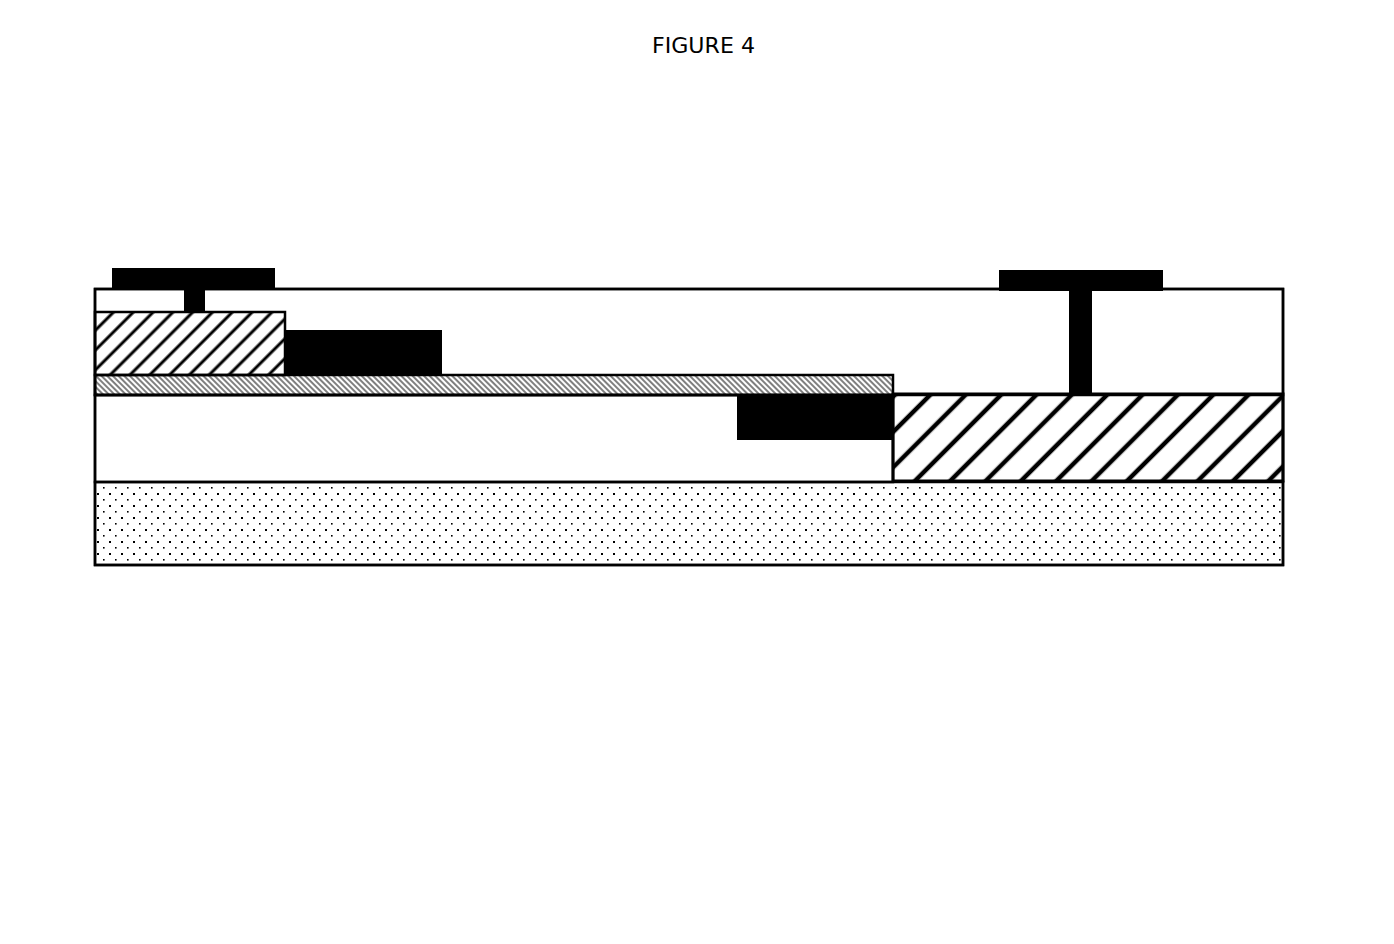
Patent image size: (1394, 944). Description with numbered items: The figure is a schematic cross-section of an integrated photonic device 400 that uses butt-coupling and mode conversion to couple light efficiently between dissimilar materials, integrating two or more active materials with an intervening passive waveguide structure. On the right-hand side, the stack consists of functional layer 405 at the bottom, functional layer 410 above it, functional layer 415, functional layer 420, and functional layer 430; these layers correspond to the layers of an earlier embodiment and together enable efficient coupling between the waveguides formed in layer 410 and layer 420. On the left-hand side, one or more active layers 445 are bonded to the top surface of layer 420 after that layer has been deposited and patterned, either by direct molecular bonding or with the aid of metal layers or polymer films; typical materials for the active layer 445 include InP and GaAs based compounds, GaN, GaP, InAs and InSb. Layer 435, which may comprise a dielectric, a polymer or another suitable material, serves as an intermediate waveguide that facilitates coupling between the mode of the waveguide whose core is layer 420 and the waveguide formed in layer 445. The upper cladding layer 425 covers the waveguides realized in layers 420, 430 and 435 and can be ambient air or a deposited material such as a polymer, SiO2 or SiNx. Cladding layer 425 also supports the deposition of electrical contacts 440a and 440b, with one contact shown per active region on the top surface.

The integrated photonic device 400 is at (132, 130).
The functional layer 405 is at (878, 533).
The functional layer 410 is at (1283, 438).
The functional layer 415 is at (95, 438).
The functional layer 420 is at (667, 375).
The upper cladding layer 425 is at (1283, 328).
The functional layer 430 is at (745, 440).
The intermediate waveguide layer 435 is at (367, 330).
The electrical contact 440a is at (1125, 270).
The electrical contact 440b is at (210, 307).
The active layer 445 is at (95, 343).